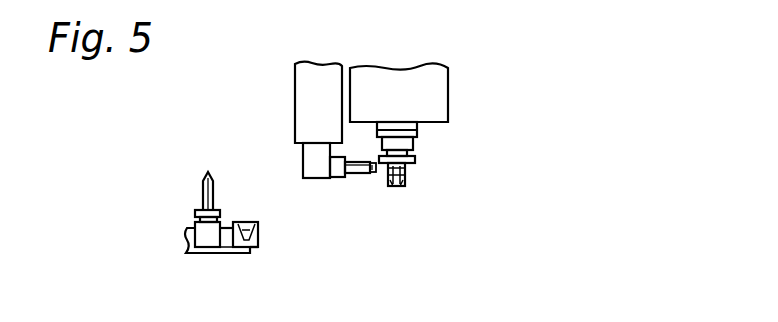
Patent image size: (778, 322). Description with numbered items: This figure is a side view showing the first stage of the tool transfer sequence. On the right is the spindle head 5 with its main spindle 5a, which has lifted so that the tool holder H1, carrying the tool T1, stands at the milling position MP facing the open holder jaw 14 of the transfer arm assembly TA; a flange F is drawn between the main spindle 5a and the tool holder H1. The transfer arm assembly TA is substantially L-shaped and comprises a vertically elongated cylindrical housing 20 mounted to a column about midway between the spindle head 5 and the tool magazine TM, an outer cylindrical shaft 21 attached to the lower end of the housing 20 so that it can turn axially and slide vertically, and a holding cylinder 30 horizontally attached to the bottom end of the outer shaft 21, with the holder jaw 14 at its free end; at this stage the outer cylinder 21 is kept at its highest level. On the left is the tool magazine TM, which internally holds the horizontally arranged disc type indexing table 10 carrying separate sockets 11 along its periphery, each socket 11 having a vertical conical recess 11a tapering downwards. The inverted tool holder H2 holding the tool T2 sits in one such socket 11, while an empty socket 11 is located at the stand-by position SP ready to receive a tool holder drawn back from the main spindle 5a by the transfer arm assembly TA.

The spindle head 5 is at (443, 88).
The main spindle 5a is at (415, 148).
The flange F is at (414, 160).
The tool holder H1 is at (407, 175).
The tool T1 is at (405, 190).
The vertically elongated cylindrical housing 20 is at (303, 97).
The outer cylindrical shaft 21 is at (310, 166).
The transfer arm assembly TA is at (296, 182).
The holding cylinder 30 is at (337, 178).
The milling position MP is at (372, 178).
The movable holder jaw 14 is at (360, 176).
The tool magazine TM is at (178, 240).
The indexing table 10 is at (225, 253).
The socket 11 is at (200, 248).
The conical recess 11a is at (261, 232).
The stand-by position SP is at (261, 247).
The tool holder H2 is at (184, 212).
The tool T2 is at (205, 190).